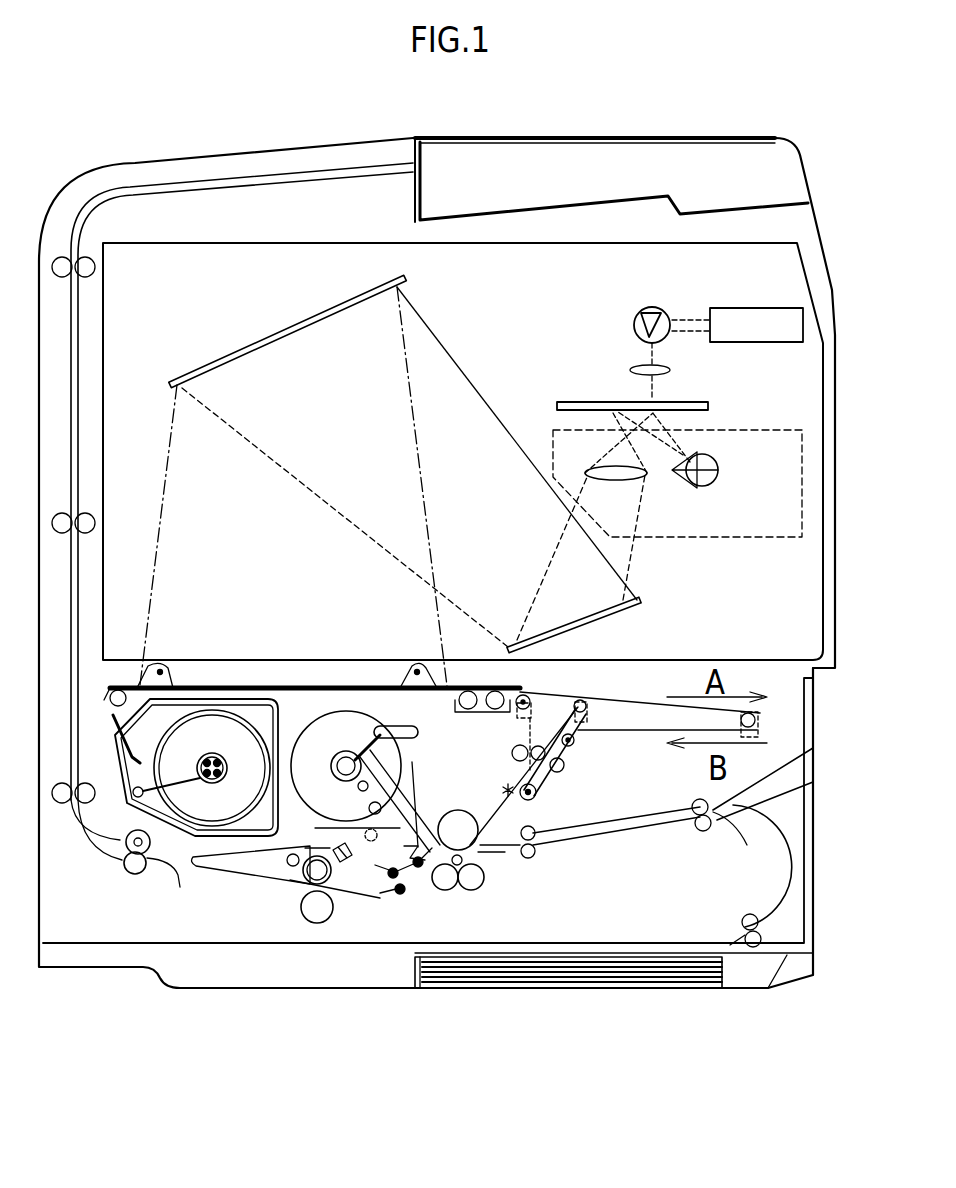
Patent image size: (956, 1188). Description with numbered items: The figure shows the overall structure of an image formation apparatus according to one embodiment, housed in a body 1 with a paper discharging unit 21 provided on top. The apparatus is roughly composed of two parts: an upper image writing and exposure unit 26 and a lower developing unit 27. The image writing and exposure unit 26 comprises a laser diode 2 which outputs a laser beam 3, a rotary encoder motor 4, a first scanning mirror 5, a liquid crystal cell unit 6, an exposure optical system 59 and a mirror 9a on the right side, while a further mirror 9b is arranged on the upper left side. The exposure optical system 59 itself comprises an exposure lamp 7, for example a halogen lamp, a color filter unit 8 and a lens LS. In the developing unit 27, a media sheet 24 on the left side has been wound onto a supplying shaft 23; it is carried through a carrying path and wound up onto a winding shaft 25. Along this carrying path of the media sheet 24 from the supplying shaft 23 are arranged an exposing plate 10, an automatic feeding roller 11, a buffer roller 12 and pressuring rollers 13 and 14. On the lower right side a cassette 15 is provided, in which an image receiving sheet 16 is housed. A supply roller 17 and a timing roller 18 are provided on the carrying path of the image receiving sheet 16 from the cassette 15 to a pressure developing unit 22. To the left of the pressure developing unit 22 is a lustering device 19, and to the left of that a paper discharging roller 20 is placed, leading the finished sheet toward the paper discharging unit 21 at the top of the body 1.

The body 1 is at (818, 218).
The laser diode 2 is at (775, 308).
The laser beam 3 is at (702, 318).
The rotary encoder motor 4 is at (648, 307).
The first scanning mirror 5 is at (634, 322).
The liquid crystal cell unit 6 is at (690, 402).
The exposure lamp 7 is at (717, 478).
The color filter unit 8 is at (718, 462).
The lens LS is at (612, 480).
The mirror 9a is at (641, 600).
The mirror 9b is at (405, 280).
The exposing plate 10 is at (368, 688).
The automatic feeding roller 11 is at (530, 700).
The buffer roller 12 is at (585, 703).
The pressuring roller 13 is at (458, 810).
The pressuring roller 14 is at (478, 890).
The cassette 15 is at (450, 990).
The image receiving sheet 16 is at (610, 990).
The supply roller 17 is at (742, 924).
The timing roller 18 is at (697, 832).
The lustering device 19 is at (288, 908).
The paper discharging roller 20 is at (137, 875).
The paper discharging unit 21 is at (765, 162).
The pressure developing unit 22 is at (453, 899).
The supplying shaft 23 is at (222, 760).
The media sheet 24 is at (207, 722).
The winding shaft 25 is at (345, 758).
The image writing and exposure unit 26 is at (808, 378).
The developing unit 27 is at (790, 705).
The exposure optical system 59 is at (802, 495).